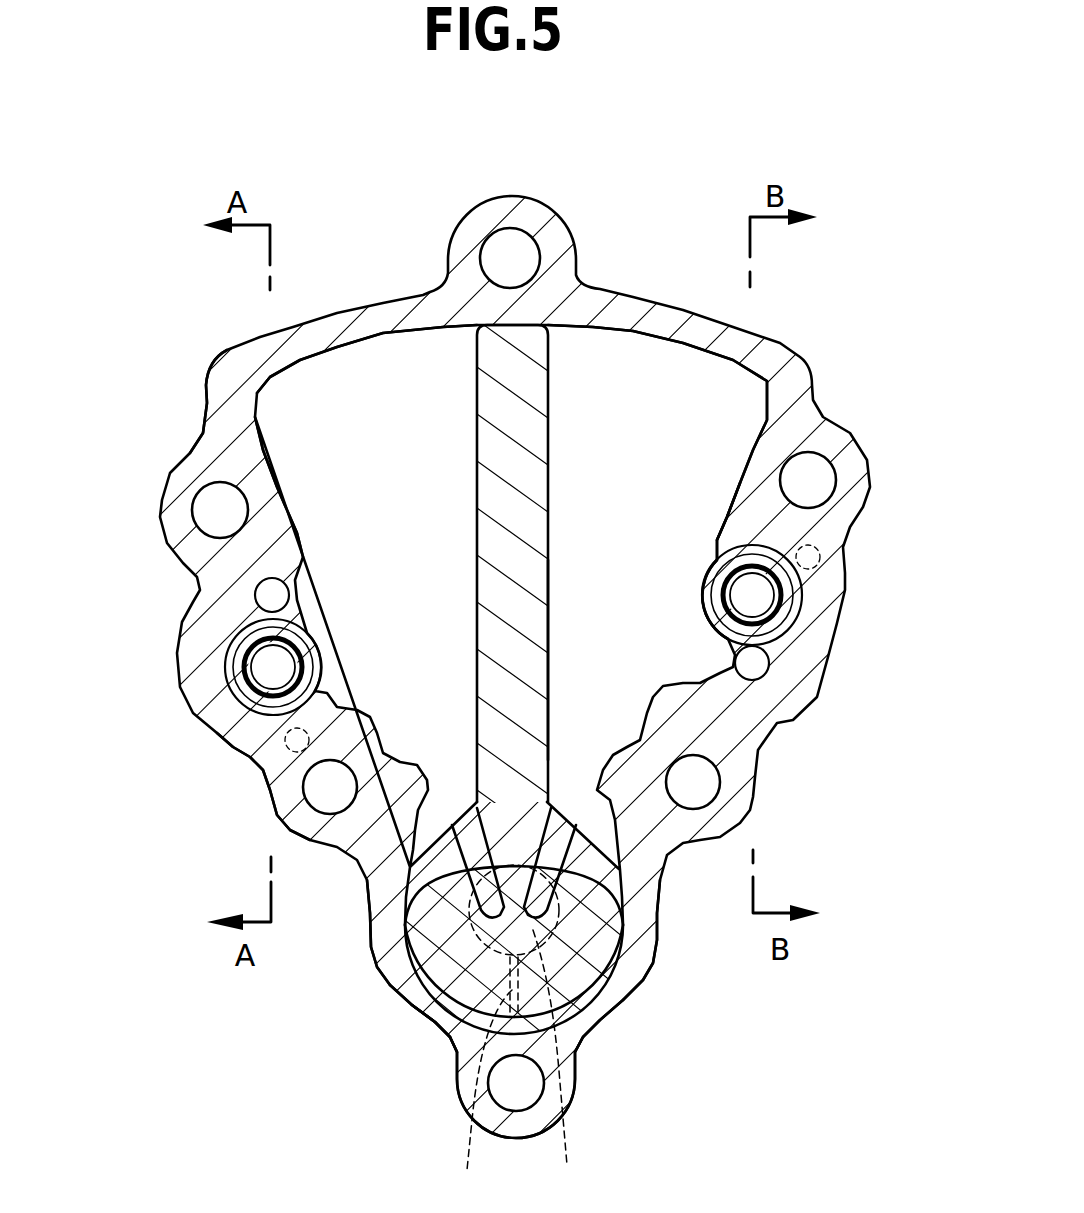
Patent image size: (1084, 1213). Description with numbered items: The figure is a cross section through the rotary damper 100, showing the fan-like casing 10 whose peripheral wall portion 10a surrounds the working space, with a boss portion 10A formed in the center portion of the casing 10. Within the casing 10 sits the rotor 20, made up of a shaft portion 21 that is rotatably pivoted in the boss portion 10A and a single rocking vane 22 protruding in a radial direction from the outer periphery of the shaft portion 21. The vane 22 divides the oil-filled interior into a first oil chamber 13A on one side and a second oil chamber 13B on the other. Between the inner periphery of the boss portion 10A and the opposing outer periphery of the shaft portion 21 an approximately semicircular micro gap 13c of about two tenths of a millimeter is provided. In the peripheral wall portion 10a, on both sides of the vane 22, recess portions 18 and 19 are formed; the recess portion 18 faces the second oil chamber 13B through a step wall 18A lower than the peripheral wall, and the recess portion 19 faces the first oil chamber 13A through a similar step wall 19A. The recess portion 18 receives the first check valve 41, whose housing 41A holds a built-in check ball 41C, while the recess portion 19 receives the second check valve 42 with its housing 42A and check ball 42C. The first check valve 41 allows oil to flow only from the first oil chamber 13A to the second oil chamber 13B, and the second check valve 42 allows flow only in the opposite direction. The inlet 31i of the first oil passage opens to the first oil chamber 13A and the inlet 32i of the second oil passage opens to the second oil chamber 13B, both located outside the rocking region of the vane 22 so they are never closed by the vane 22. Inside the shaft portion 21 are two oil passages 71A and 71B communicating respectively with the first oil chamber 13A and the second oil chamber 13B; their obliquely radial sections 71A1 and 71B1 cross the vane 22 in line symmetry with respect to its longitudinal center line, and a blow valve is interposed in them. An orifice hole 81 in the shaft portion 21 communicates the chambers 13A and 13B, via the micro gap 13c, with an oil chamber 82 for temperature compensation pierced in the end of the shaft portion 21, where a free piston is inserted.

The rotary damper 100 is at (190, 352).
The casing 10 is at (218, 577).
The peripheral wall portion 10a is at (232, 425).
The boss portion 10A is at (593, 1022).
The first oil chamber 13A is at (395, 412).
The second oil chamber 13B is at (635, 402).
The semicircular micro gap 13c is at (437, 1028).
The recess portion 18 is at (685, 623).
The step wall 18A is at (722, 551).
The recess portion 19 is at (342, 650).
The step wall 19A is at (262, 760).
The rotor 20 is at (460, 548).
The shaft portion 21 is at (427, 1050).
The rocking vane 22 is at (520, 667).
The inlet 31i is at (276, 597).
The inlet 32i is at (748, 663).
The first check valve 41 is at (698, 564).
The housing 41A is at (712, 590).
The check ball 41C is at (760, 595).
The second check valve 42 is at (340, 683).
The housing 42A is at (291, 637).
The check ball 42C is at (265, 667).
The oil passage 71A is at (390, 972).
The oil passage 71B is at (623, 970).
The obliquely radial oil passage 71A1 is at (445, 1012).
The obliquely radial oil passage 71B1 is at (590, 1020).
The orifice hole 81 is at (468, 1170).
The oil chamber for temperature compensation 82 is at (567, 1165).